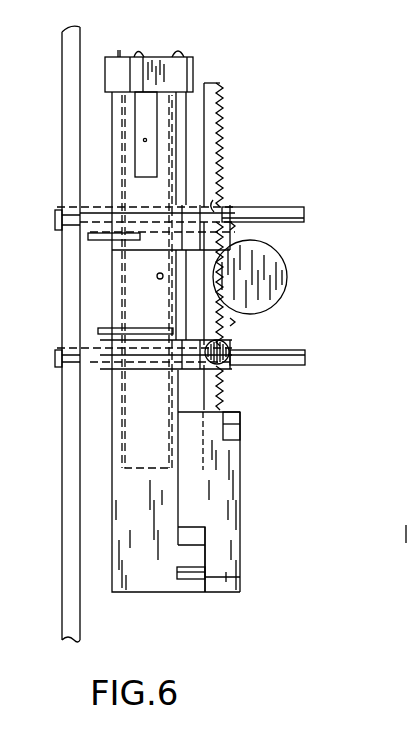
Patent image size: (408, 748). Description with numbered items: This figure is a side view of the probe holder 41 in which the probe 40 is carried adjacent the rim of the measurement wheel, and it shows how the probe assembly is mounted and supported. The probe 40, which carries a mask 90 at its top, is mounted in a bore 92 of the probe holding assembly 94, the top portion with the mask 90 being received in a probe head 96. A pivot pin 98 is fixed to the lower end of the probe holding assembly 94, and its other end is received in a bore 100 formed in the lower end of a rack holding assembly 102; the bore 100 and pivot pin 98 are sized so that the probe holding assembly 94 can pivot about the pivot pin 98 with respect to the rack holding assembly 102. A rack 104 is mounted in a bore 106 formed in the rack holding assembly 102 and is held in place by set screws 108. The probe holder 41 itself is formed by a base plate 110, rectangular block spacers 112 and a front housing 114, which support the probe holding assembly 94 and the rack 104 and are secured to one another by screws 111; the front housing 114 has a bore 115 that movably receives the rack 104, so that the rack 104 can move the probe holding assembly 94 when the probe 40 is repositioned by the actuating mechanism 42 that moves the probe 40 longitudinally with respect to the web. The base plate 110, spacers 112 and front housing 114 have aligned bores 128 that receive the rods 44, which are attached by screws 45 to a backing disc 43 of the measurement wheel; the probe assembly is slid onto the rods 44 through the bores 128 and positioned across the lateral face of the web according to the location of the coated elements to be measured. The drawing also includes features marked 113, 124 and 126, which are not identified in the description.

The probe 40 is at (138, 443).
The probe holder 41 is at (282, 136).
The actuating mechanism 42 is at (400, 477).
The backing disc 43 is at (76, 484).
The rods 44 is at (266, 206).
The screws 45 is at (56, 212).
The mask 90 is at (141, 54).
The bore 92 is at (174, 168).
The probe holding assembly 94 is at (115, 139).
The probe head 96 is at (178, 72).
The pivot pin 98 is at (236, 577).
The bore 100 is at (212, 568).
The rack holding assembly 102 is at (234, 502).
The rack 104 is at (220, 122).
The bore 106 is at (210, 448).
The set screws 108 is at (236, 444).
The base plate 110 is at (94, 292).
The screws 111 is at (236, 228).
The rectangular block spacers 112 is at (158, 321).
The pinion gear 113 is at (226, 362).
The front housing 114 is at (222, 321).
The bore 115 is at (216, 204).
The pin 124 is at (158, 275).
The gear 126 is at (272, 266).
The aligned bores 128 is at (140, 215).